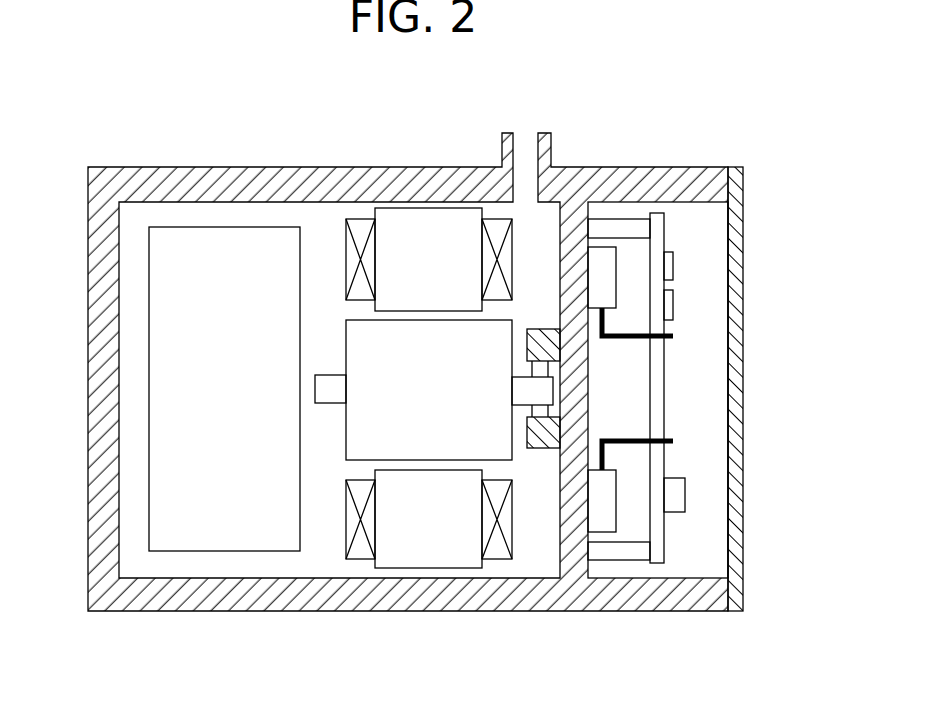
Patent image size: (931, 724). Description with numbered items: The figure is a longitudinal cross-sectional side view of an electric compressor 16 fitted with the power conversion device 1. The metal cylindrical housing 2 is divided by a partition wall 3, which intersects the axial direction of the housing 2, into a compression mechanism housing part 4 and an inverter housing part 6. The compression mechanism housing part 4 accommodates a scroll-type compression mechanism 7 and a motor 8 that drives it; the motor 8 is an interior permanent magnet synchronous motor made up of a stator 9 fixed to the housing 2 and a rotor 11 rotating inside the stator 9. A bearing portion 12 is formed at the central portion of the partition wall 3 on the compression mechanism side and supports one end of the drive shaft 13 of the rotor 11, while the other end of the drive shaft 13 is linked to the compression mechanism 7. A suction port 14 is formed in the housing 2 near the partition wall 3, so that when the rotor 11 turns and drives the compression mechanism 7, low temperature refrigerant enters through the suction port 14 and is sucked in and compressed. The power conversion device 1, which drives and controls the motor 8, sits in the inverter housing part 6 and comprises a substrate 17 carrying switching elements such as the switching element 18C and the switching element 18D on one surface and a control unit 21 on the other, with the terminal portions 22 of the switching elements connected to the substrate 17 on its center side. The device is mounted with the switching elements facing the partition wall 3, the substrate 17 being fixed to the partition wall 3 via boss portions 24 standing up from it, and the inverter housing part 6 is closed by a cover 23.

The power conversion device 1 is at (676, 548).
The housing 2 is at (141, 595).
The partition wall 3 is at (572, 228).
The compression mechanism housing part 4 is at (318, 230).
The inverter housing part 6 is at (702, 223).
The compression mechanism 7 is at (195, 320).
The motor 8 is at (331, 440).
The stator 9 is at (405, 252).
The rotor 11 is at (433, 433).
The bearing portion 12 is at (547, 432).
The drive shaft 13 is at (522, 388).
The suction port 14 is at (525, 145).
The electric compressor 16 is at (256, 120).
The substrate 17 is at (660, 215).
The switching element 18C is at (607, 267).
The switching element 18D is at (600, 500).
The control unit 21 is at (672, 495).
The terminal portions 22 is at (633, 333).
The cover 23 is at (736, 600).
The boss portions 24 is at (602, 220).